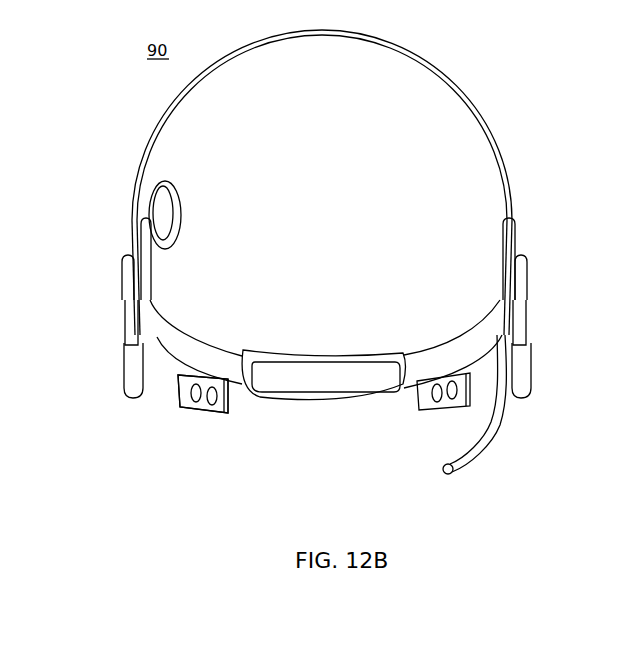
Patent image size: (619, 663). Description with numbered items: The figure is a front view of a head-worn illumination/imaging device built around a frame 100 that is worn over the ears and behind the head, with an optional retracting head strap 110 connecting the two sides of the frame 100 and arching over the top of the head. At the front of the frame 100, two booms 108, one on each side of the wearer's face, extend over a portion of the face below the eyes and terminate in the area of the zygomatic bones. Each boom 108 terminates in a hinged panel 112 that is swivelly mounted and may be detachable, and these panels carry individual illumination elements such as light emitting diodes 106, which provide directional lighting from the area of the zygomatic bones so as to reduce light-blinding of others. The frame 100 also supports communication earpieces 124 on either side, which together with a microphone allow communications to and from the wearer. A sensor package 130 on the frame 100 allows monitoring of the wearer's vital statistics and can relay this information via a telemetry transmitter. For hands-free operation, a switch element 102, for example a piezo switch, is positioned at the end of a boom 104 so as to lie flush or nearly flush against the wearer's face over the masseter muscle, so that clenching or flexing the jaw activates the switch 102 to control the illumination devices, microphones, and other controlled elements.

The retracting head strap 110 is at (428, 62).
The sensor package 130 is at (168, 212).
The communication earpiece 124 is at (122, 388).
The frame 100 is at (462, 352).
The boom 108 is at (154, 398).
The hinged panel 112 is at (232, 408).
The light emitting diodes 106 is at (190, 404).
The boom 104 is at (500, 422).
The switch element 102 is at (455, 474).